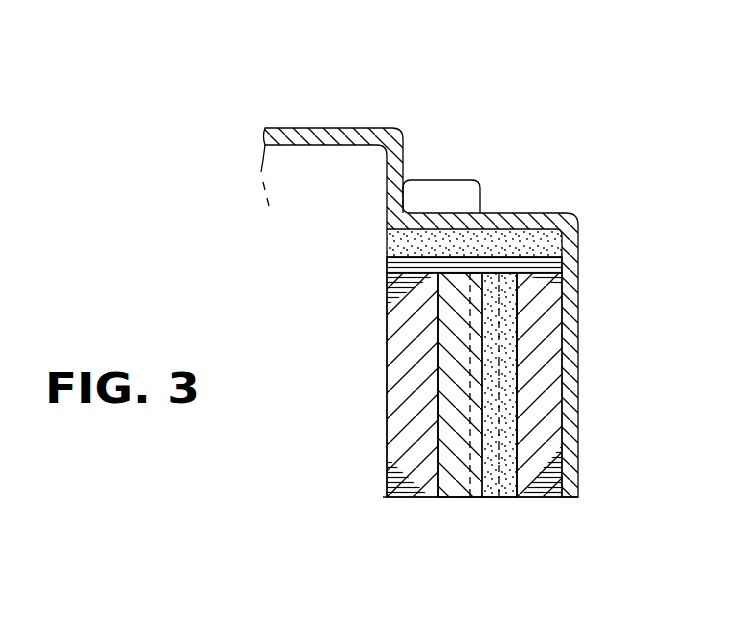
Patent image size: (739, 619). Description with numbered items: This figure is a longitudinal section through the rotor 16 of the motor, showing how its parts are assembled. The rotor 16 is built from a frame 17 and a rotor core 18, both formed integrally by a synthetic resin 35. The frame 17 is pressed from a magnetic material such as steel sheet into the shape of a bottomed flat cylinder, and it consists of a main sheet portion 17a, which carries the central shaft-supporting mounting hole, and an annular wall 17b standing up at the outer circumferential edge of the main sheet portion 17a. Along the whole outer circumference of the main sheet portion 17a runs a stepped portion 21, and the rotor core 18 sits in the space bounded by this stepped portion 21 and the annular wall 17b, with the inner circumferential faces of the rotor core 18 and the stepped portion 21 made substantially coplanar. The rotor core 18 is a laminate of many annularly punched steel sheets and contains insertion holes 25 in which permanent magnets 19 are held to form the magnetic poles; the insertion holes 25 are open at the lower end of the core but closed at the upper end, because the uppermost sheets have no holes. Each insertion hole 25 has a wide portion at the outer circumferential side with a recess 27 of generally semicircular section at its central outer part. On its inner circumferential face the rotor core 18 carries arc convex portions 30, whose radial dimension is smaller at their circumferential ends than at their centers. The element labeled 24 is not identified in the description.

The rotor 16 is at (436, 128).
The frame 17 is at (572, 206).
The main sheet portion 17a is at (318, 128).
The annular wall 17b is at (570, 377).
The rotor core 18 is at (398, 497).
The permanent magnet 19 is at (453, 497).
The stepped portion 21 is at (440, 234).
The separator 24 is at (380, 398).
The insertion hole 25 is at (485, 497).
The recess 27 is at (518, 334).
The arc convex portion 30 is at (387, 343).
The synthetic resin 35 is at (507, 455).